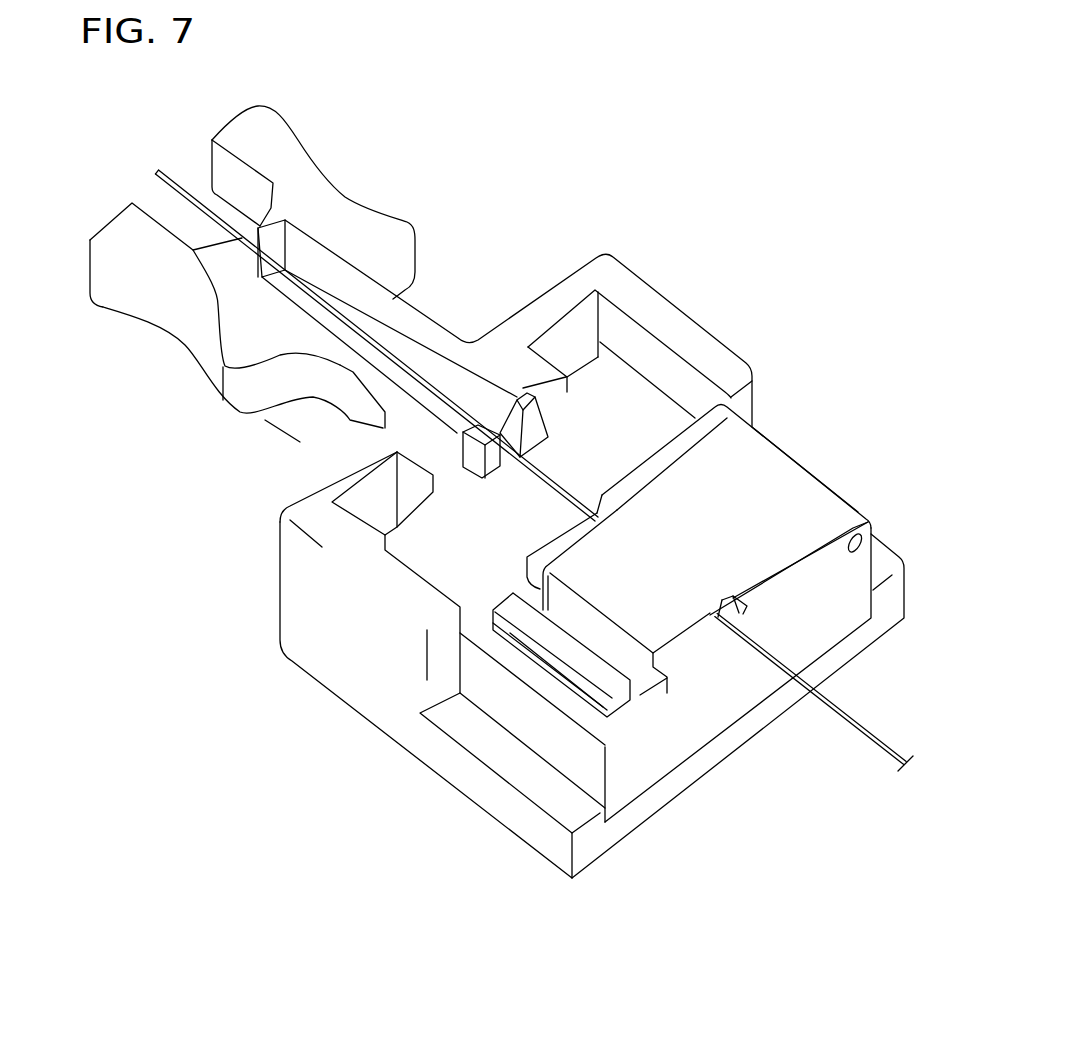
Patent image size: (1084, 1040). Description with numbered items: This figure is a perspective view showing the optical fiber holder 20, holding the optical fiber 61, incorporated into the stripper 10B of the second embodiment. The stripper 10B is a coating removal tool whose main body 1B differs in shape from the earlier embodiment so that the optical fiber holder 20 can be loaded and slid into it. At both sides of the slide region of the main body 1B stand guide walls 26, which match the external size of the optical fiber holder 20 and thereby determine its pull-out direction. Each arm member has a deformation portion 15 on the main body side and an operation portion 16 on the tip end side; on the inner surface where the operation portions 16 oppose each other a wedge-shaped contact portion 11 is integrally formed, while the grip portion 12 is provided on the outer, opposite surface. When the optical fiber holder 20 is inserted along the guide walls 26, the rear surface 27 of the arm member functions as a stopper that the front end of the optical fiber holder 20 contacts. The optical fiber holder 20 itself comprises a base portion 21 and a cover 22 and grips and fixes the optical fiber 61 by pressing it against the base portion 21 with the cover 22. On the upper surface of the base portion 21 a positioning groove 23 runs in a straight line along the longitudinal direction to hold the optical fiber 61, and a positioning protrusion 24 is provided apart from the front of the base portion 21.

The main body 1B is at (374, 731).
The stripper 10B is at (552, 233).
The contact portion 11 is at (240, 243).
The grip portion 12 is at (150, 300).
The deformation portion 15 is at (353, 370).
The operation portion 16 is at (217, 303).
The optical fiber holder 20 is at (780, 446).
The base portion 21 is at (627, 410).
The cover 22 is at (785, 505).
The positioning groove 23 is at (737, 618).
The positioning protrusion 24 is at (537, 430).
The guide wall 26 is at (713, 362).
The rear surface 27 is at (455, 477).
The optical fiber 61 is at (387, 350).